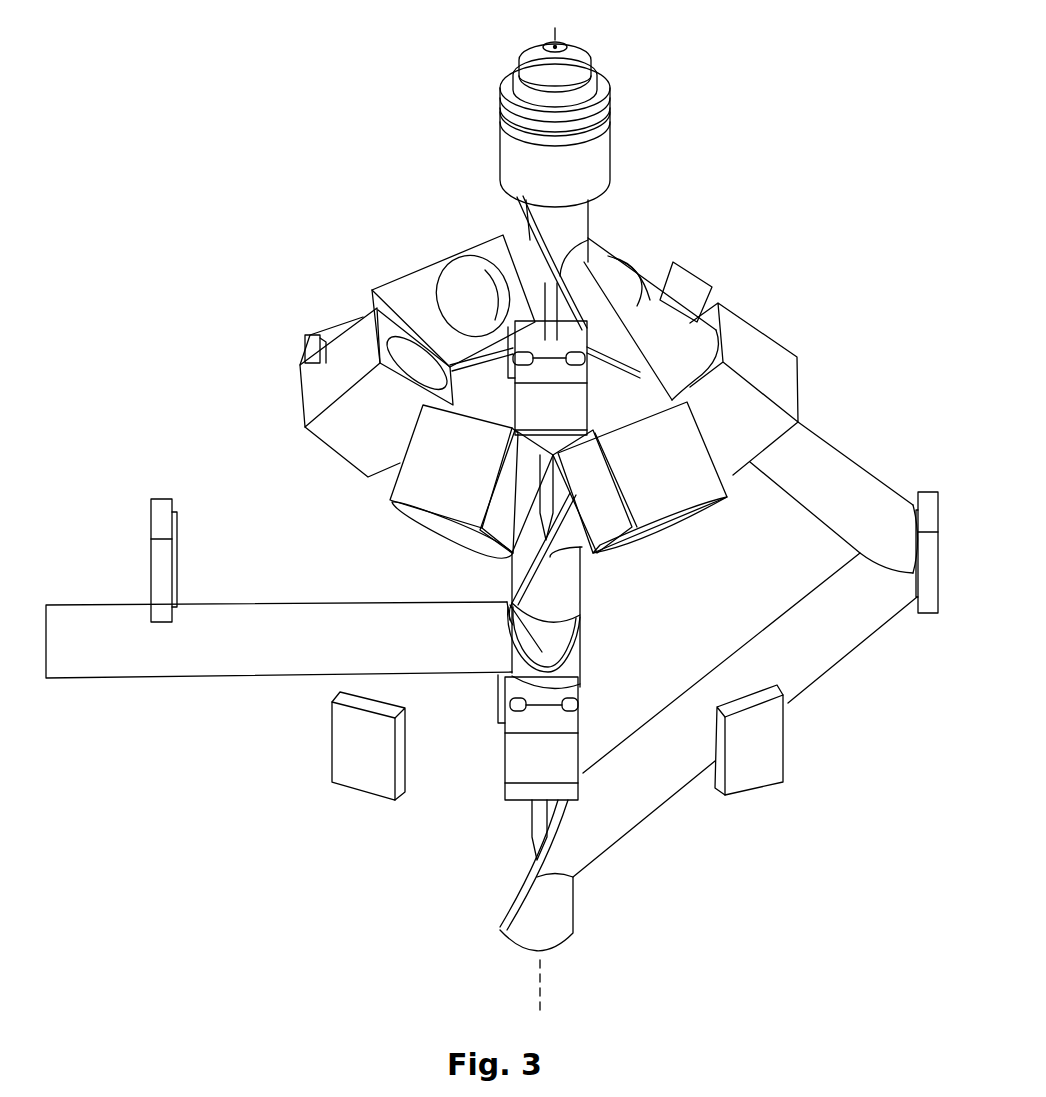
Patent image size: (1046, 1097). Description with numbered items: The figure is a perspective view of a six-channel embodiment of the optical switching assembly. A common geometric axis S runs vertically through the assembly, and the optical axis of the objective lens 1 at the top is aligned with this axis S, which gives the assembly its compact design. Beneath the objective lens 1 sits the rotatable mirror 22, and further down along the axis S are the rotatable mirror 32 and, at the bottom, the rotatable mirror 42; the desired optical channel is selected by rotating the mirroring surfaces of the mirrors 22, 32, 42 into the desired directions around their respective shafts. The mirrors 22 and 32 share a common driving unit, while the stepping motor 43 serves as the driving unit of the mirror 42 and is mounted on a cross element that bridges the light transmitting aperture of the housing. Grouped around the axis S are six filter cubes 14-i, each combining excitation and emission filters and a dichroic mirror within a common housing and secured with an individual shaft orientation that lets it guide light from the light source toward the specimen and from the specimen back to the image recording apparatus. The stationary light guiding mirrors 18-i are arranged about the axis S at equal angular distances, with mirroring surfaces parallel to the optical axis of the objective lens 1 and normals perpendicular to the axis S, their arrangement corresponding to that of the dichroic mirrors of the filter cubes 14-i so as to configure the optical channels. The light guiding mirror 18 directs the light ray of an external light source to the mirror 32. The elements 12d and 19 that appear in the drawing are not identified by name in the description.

The common geometric axis S is at (562, 10).
The objective lens 1 is at (612, 150).
The rotatable mirror 22 is at (527, 230).
The filter cubes 14-i is at (419, 260).
The mirrors 18-i is at (308, 344).
The arm 12d is at (830, 452).
The column 19 is at (565, 669).
The light guiding mirror 18 is at (583, 626).
The rotatable mirror 32 is at (514, 569).
The stepping motor 43 is at (518, 767).
The rotatable mirror 42 is at (506, 894).